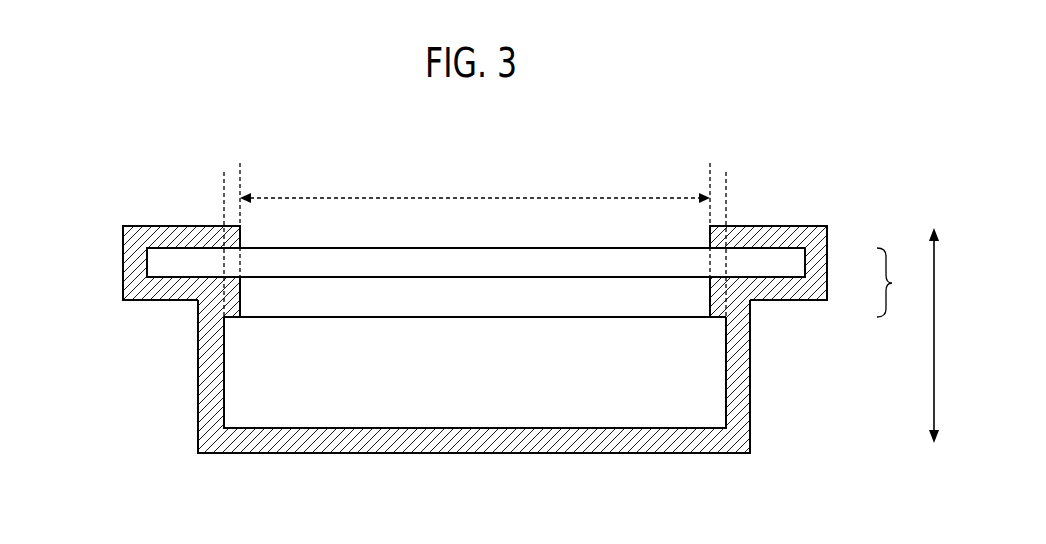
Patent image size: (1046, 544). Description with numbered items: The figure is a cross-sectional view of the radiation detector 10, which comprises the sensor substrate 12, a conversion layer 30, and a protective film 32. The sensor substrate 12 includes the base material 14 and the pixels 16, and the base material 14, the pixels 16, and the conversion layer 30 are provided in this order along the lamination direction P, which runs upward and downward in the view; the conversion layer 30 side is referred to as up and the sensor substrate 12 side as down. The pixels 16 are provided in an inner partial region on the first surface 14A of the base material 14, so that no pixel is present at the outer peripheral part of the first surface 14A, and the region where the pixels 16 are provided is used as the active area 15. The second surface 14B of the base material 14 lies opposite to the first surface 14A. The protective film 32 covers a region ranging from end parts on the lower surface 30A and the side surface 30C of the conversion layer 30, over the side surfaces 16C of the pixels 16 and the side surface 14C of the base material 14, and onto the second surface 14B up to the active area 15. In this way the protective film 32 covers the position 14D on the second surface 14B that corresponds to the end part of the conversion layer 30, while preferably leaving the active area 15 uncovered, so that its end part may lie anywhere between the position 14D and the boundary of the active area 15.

The radiation detector 10 is at (812, 505).
The sensor substrate 12 is at (901, 282).
The base material 14 is at (795, 260).
The first surface 14A is at (179, 281).
The second surface 14B is at (541, 245).
The side surface of the base material 14C is at (144, 261).
The position corresponding to the end part of the conversion layer 14D is at (226, 245).
The active area 15 is at (475, 183).
The pixels 16 is at (688, 293).
The side surfaces of the pixels 16C is at (237, 301).
The conversion layer 30 is at (713, 375).
The lower surface of the conversion layer 30A is at (493, 430).
The side surface of the conversion layer 30C is at (221, 372).
The protective film 32 is at (737, 428).
The lamination direction P is at (945, 335).